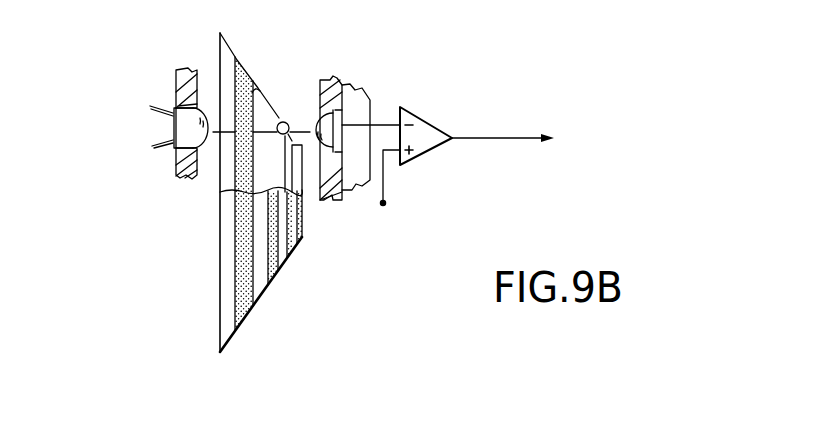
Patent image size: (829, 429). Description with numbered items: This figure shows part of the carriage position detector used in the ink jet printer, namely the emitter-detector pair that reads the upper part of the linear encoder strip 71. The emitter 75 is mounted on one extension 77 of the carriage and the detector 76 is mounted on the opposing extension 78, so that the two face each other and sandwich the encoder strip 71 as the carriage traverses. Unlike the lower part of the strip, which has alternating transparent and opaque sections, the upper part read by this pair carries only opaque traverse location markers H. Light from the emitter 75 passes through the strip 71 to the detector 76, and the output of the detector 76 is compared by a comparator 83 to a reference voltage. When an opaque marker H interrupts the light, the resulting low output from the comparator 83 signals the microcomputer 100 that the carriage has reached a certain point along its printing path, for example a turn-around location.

The linear encoder strip 71 is at (210, 226).
The emitter 75 is at (166, 123).
The detector 76 is at (316, 116).
The extension of carriage 77 is at (182, 70).
The extension of carriage 78 is at (330, 80).
The comparator 83 is at (424, 116).
The microcomputer 100 is at (630, 139).
The opaque traverse location markers H is at (253, 90).